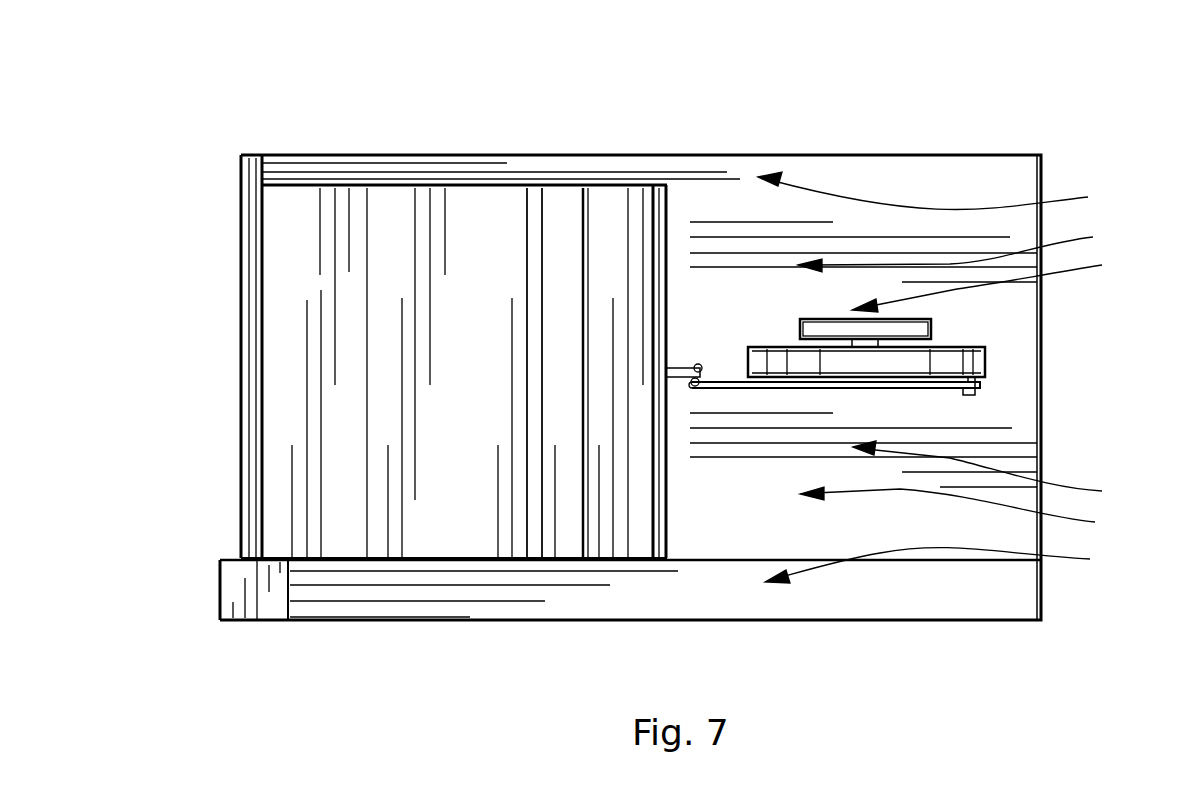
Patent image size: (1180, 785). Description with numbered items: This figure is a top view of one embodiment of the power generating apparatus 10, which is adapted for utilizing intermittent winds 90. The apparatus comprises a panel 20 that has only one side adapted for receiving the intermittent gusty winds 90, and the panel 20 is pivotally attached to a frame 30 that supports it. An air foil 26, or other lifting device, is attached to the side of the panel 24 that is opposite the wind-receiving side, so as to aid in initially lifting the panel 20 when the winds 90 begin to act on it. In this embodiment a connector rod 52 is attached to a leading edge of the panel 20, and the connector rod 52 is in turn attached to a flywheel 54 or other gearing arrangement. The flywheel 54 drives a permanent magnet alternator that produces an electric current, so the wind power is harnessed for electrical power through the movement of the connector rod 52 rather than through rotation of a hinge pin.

The power generating apparatus 10 is at (172, 176).
The panel 20 is at (351, 290).
The side of the panel 24 is at (510, 205).
The air foil 26 is at (621, 207).
The frame 30 is at (558, 596).
The connector rod 52 is at (705, 392).
The flywheel 54 is at (945, 360).
The intermittent winds 90 is at (1060, 196).